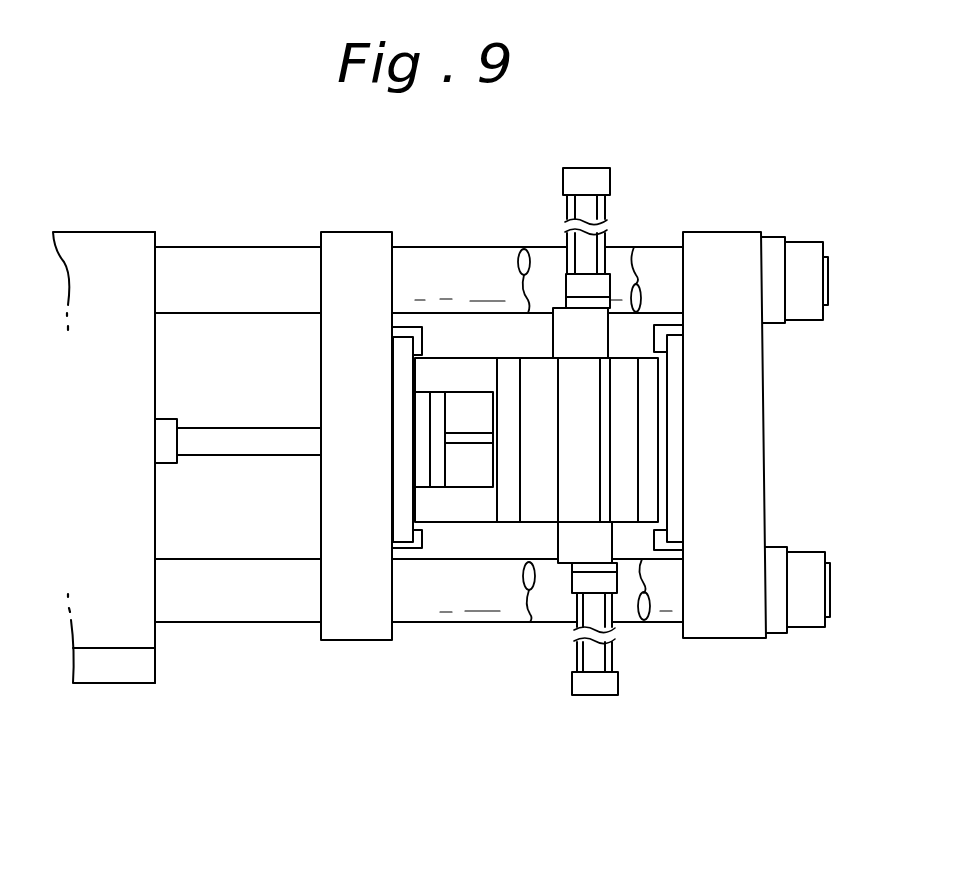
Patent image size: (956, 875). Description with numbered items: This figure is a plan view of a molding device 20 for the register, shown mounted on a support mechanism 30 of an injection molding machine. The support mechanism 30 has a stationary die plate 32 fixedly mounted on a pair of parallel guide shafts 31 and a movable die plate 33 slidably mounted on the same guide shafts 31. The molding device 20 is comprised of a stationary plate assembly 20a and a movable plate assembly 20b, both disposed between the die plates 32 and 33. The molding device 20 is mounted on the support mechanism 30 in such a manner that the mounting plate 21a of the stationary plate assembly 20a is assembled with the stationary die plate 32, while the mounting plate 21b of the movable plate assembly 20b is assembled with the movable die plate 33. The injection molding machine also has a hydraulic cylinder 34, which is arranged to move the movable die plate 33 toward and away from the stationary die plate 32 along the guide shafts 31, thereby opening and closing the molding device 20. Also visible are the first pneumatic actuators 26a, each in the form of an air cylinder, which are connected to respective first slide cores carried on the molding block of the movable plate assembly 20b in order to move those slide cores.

The molding device 20 is at (504, 524).
The stationary plate assembly 20a is at (648, 420).
The movable plate assembly 20b is at (578, 405).
The mounting plate 21a is at (673, 412).
The mounting plate 21b is at (402, 402).
The first pneumatic actuators 26a is at (597, 183).
The support mechanism 30 is at (797, 232).
The guide shafts 31 is at (443, 270).
The stationary die plate 32 is at (743, 407).
The movable die plate 33 is at (362, 622).
The hydraulic cylinder 34 is at (120, 243).